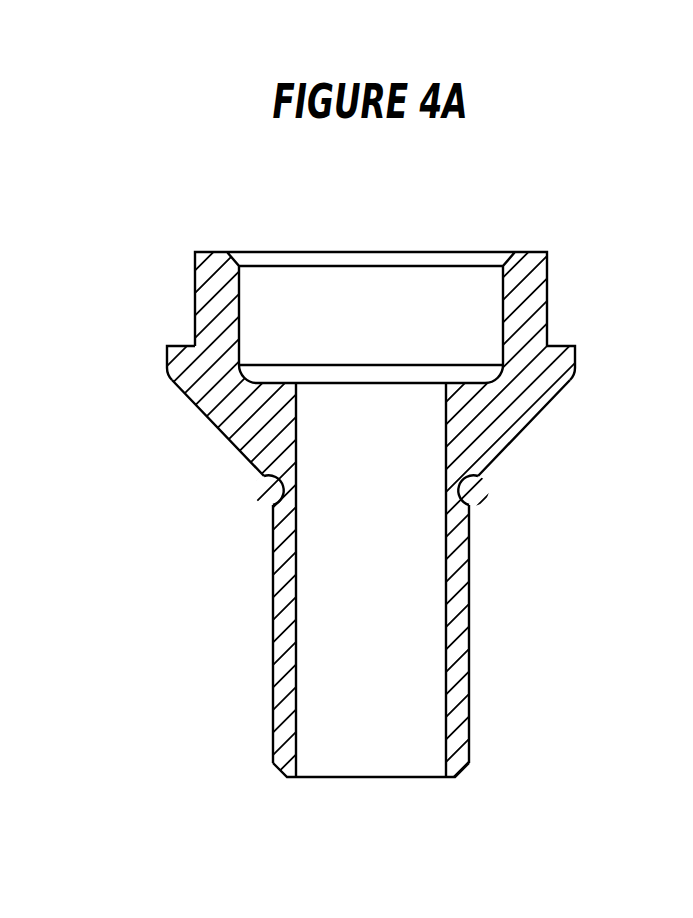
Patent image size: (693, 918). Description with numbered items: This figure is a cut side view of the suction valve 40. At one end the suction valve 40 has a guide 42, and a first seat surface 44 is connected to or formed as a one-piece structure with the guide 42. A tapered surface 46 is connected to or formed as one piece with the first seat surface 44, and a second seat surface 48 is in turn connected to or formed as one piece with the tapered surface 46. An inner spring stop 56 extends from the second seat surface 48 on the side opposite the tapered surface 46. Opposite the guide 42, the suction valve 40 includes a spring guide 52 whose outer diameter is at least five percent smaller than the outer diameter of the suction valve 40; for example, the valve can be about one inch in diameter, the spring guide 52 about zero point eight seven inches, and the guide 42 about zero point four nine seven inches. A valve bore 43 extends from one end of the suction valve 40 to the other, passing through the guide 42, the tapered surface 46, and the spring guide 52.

The suction valve 40 is at (166, 212).
The guide 42 is at (470, 617).
The valve bore 43 is at (371, 769).
The first seat surface 44 is at (465, 487).
The tapered surface 46 is at (517, 437).
The second seat surface 48 is at (554, 380).
The spring guide 52 is at (546, 296).
The inner spring stop 56 is at (472, 383).